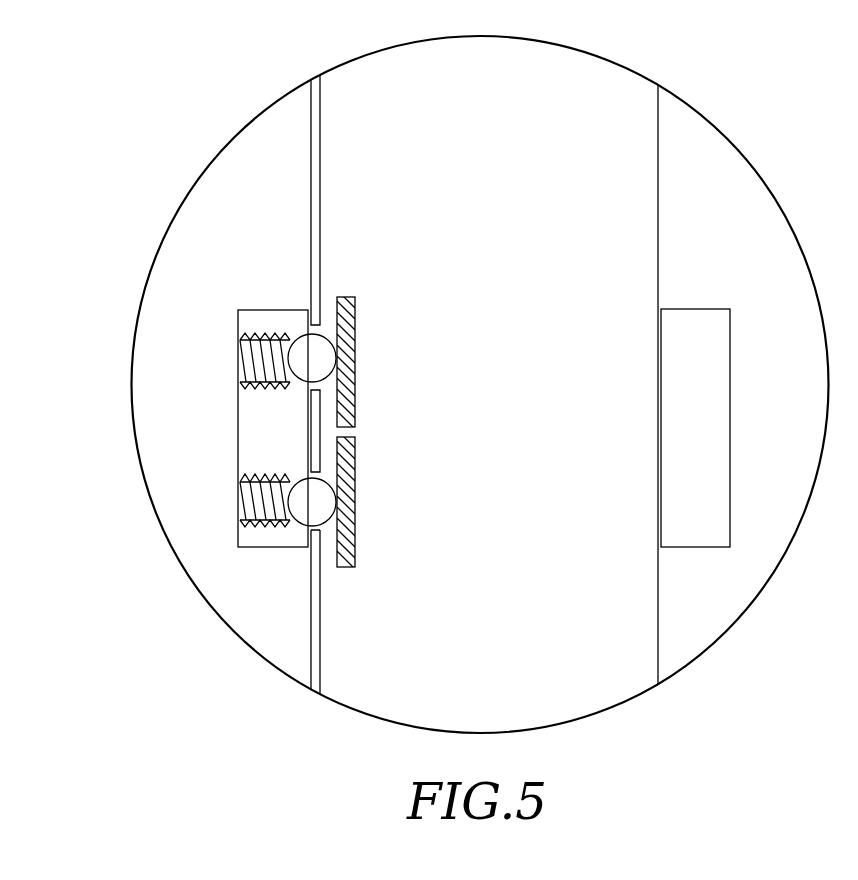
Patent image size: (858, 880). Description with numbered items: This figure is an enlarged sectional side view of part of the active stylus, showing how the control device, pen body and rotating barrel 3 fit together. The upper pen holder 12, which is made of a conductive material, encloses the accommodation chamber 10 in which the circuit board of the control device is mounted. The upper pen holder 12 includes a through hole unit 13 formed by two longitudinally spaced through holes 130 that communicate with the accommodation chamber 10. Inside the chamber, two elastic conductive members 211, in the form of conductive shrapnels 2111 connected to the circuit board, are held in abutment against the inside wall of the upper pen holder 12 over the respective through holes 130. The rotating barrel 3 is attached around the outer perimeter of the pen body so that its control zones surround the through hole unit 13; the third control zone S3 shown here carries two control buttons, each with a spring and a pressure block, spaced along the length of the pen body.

The accommodation chamber 10 is at (686, 384).
The upper pen holder 12 is at (658, 163).
The rotating barrel 3 is at (712, 405).
The elastic conductive member 211 is at (391, 409).
The conductive shrapnel 2111 is at (355, 352).
The through hole unit 13 is at (198, 487).
The through hole 130 is at (306, 520).
The third control zone S3 is at (212, 427).